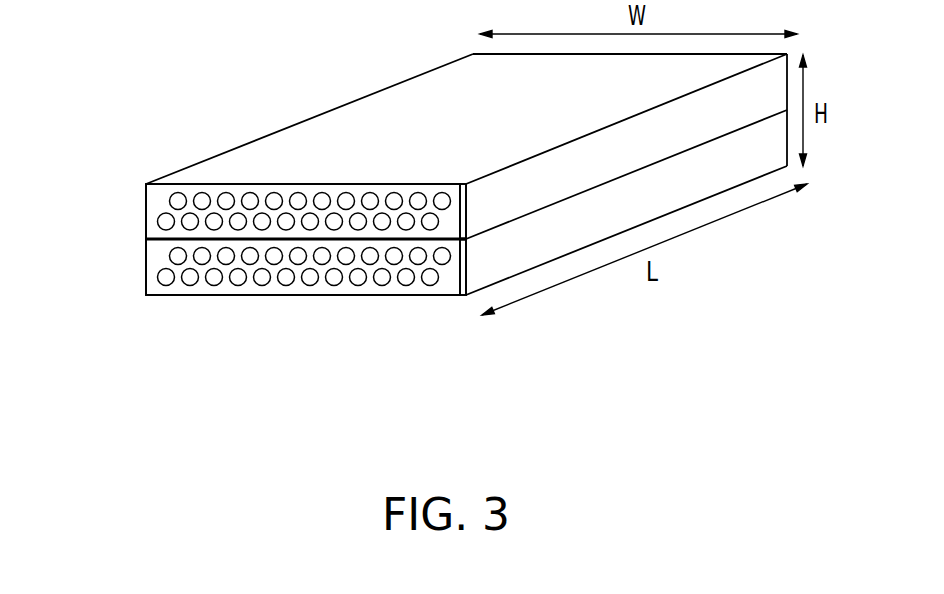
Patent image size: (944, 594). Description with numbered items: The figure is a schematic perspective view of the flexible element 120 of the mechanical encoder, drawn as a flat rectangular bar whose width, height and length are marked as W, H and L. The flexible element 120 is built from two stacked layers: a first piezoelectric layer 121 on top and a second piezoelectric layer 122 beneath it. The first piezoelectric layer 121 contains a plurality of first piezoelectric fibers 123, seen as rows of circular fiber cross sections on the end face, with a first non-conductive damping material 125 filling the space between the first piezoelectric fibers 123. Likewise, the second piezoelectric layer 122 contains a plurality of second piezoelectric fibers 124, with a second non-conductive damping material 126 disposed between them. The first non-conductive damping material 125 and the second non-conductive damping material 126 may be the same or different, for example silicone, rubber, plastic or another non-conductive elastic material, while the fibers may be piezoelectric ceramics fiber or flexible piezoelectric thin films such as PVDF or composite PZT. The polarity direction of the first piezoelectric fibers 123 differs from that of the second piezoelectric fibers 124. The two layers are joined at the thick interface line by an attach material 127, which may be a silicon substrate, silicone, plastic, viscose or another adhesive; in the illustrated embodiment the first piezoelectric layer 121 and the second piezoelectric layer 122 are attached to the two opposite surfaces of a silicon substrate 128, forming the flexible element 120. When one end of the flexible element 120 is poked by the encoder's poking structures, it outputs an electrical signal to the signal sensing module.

The flexible element 120 is at (772, 376).
The first piezoelectric layer 121 is at (155, 201).
The second piezoelectric layer 122 is at (157, 267).
The first piezoelectric fibers 123 is at (274, 198).
The second piezoelectric fibers 124 is at (209, 278).
The first non-conductive damping material 125 is at (456, 192).
The second non-conductive damping material 126 is at (455, 283).
The attach material 127 is at (466, 240).
The silicon substrate 128 is at (155, 230).